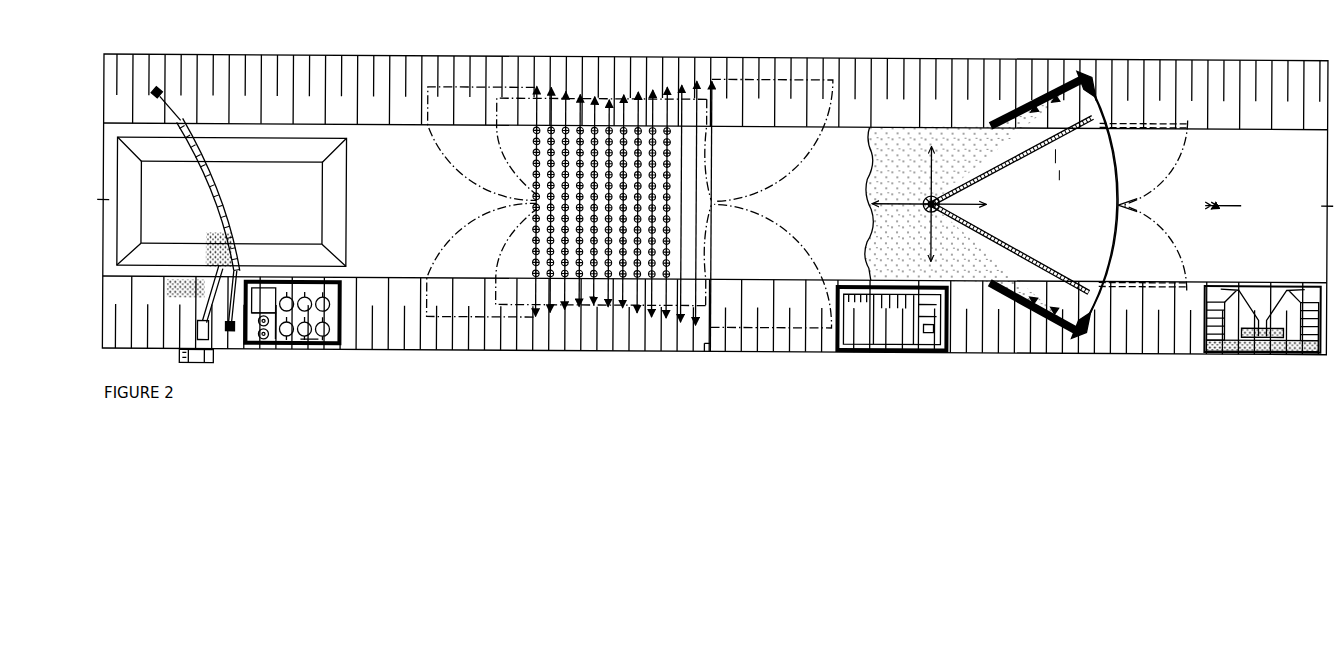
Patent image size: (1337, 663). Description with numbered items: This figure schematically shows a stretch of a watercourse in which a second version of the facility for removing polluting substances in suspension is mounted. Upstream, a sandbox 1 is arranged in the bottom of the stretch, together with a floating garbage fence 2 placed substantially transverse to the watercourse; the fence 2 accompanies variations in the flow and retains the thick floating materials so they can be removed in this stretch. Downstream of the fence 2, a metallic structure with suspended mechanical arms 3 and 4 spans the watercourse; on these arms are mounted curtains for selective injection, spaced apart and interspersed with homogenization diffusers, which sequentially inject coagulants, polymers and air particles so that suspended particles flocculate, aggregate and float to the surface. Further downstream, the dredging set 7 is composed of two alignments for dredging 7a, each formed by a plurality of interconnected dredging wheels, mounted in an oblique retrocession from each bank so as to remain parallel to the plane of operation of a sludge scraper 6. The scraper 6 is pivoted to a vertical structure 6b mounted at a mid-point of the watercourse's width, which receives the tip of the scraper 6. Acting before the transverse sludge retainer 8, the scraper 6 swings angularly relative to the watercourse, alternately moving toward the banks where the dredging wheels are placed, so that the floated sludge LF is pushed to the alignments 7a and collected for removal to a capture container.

The sandbox 1 is at (147, 199).
The floating garbage fence 2 is at (232, 188).
The mechanical arm 3 is at (608, 326).
The mechanical arm 4 is at (702, 324).
The sludge scraper 6 is at (1032, 157).
The vertical structure 6b is at (925, 188).
The dredging set 7 is at (1089, 205).
The alignment for dredging 7a is at (1051, 77).
The transverse sludge retainer 8 is at (1118, 246).
The floated sludge LF is at (870, 203).